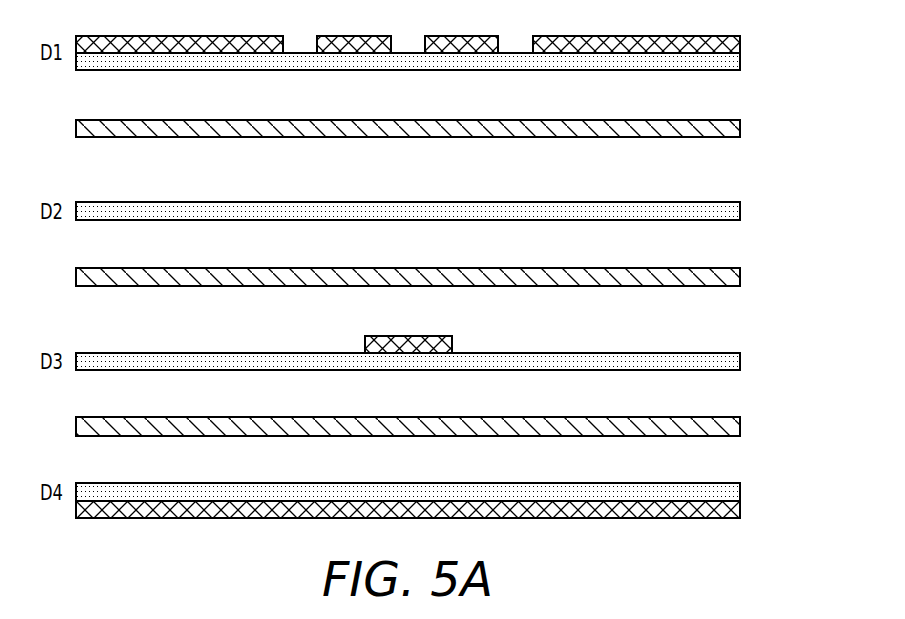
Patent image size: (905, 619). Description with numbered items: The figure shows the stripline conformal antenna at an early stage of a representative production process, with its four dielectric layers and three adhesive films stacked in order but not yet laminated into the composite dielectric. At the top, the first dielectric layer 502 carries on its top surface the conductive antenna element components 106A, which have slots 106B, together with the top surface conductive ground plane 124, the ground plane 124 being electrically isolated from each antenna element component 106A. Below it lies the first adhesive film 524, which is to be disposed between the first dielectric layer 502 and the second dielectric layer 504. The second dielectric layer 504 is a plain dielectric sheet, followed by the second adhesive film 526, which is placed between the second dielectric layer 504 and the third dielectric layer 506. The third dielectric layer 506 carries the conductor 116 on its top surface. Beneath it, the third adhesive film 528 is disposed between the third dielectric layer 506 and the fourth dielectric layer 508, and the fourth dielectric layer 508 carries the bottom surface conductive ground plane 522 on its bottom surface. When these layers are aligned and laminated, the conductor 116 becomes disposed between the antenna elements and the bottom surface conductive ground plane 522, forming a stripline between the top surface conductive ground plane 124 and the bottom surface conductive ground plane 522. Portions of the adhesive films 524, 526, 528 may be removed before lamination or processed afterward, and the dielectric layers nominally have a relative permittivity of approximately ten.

The top surface conductive ground plane 124 is at (203, 36).
The conductive antenna element component 106A is at (455, 35).
The slot 106B is at (405, 35).
The conductor 116 is at (396, 336).
The first dielectric layer 502 is at (742, 60).
The second dielectric layer 504 is at (742, 211).
The third dielectric layer 506 is at (742, 361).
The fourth dielectric layer 508 is at (742, 492).
The bottom surface conductive ground plane 522 is at (742, 510).
The first adhesive film 524 is at (742, 127).
The second adhesive film 526 is at (742, 277).
The third adhesive film 528 is at (742, 427).